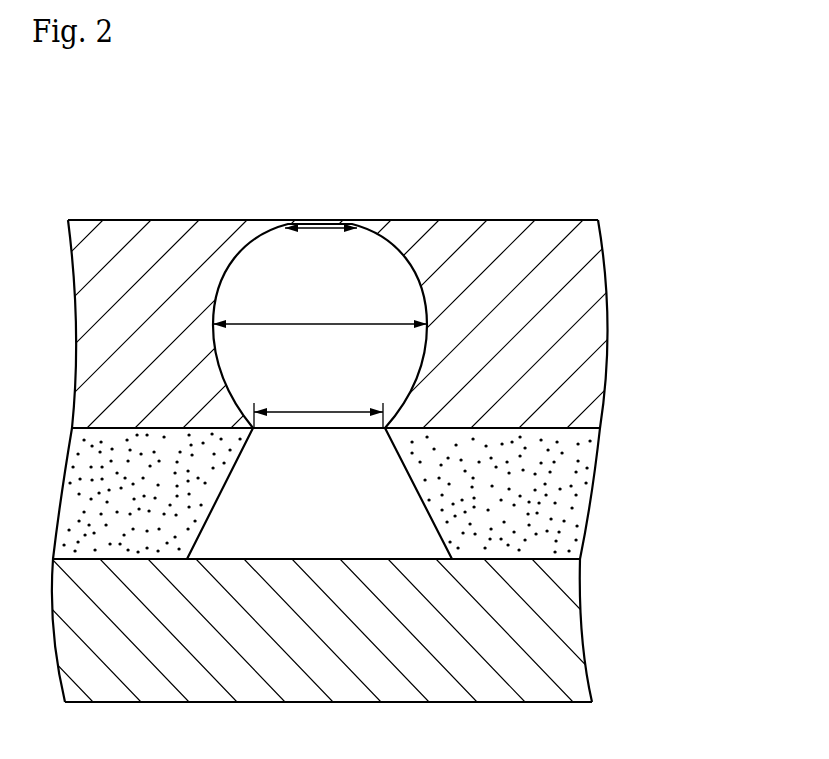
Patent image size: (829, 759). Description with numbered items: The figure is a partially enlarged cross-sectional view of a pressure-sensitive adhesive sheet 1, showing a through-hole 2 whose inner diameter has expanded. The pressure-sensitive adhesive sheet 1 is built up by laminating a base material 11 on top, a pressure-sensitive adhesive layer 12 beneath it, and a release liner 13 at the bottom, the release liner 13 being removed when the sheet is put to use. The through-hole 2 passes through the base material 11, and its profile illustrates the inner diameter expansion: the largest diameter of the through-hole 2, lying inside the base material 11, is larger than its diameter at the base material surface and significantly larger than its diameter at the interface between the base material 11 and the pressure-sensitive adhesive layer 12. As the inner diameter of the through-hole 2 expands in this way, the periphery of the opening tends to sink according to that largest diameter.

The pressure-sensitive adhesive sheet 1 is at (524, 178).
The through-hole 2 is at (238, 257).
The base material 11 is at (603, 325).
The pressure-sensitive adhesive layer 12 is at (575, 499).
The release liner 13 is at (570, 628).